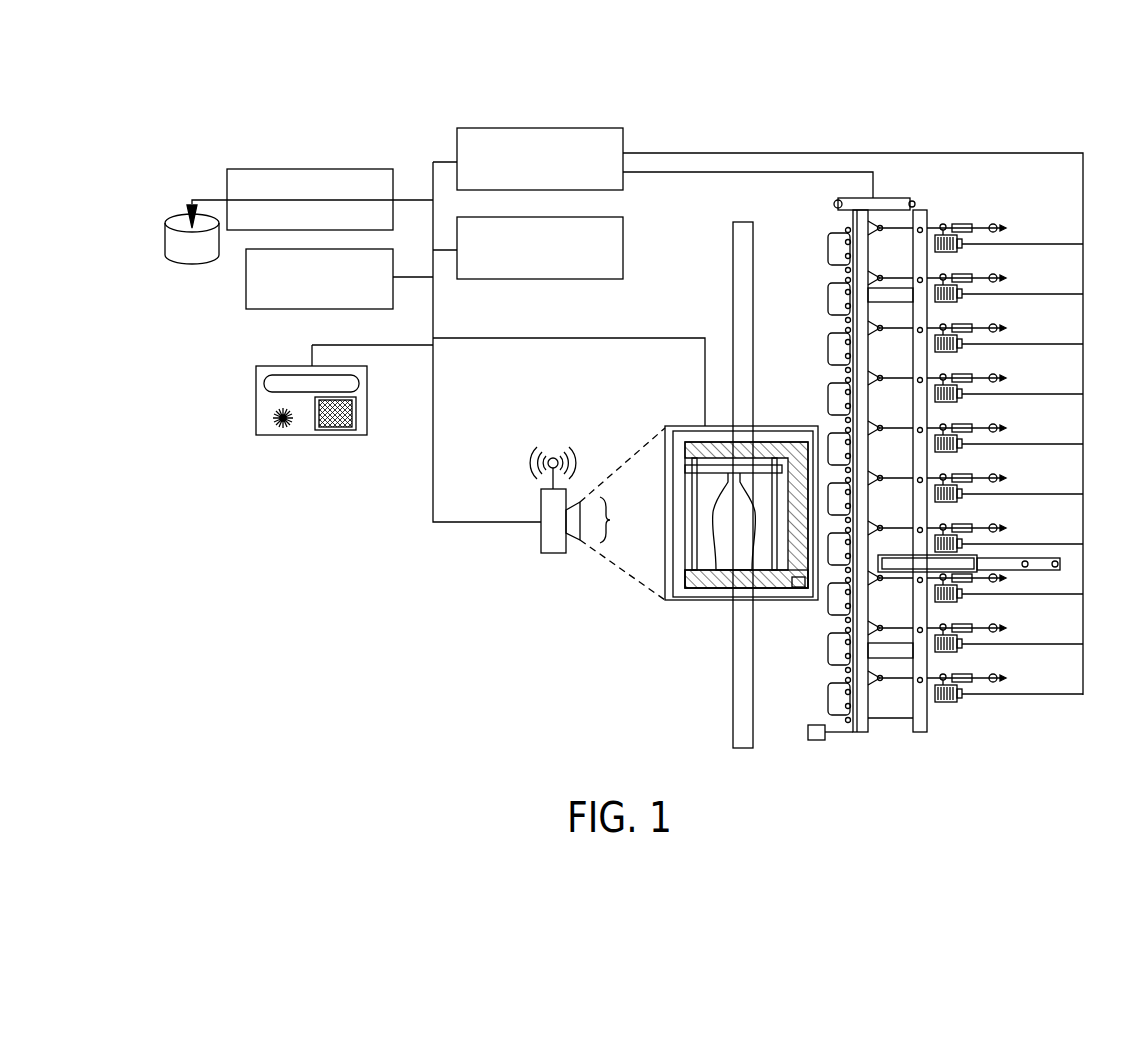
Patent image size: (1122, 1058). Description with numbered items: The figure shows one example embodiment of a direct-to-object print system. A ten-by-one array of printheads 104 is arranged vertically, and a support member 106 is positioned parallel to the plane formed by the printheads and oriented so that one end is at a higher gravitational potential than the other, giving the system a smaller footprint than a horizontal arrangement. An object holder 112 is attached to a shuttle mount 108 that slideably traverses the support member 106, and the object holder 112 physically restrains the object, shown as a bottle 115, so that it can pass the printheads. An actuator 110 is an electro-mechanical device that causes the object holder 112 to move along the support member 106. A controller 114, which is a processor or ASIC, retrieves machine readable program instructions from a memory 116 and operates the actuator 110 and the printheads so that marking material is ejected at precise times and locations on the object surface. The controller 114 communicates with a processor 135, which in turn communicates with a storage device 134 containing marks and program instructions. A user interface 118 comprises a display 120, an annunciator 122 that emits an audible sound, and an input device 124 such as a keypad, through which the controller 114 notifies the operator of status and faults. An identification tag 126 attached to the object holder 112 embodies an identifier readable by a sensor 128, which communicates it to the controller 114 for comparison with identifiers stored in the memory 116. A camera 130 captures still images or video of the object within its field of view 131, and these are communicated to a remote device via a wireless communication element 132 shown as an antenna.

The array of printheads 104 is at (812, 316).
The support member 106 is at (733, 720).
The shuttle mount 108 is at (716, 506).
The actuator 110 is at (623, 247).
The object holder 112 is at (706, 596).
The controller 114 is at (623, 144).
The bottle 115 is at (724, 525).
The memory 116 is at (246, 283).
The user interface 118 is at (278, 423).
The display 120 is at (264, 383).
The annunciator 122 is at (279, 421).
The input device 124 is at (340, 432).
The identification tag 126 is at (898, 198).
The sensor 128 is at (825, 740).
The camera 130 is at (548, 553).
The field of view 131 is at (622, 514).
The wireless communication element 132 is at (549, 480).
The storage device 134 is at (165, 242).
The processor 135 is at (311, 169).